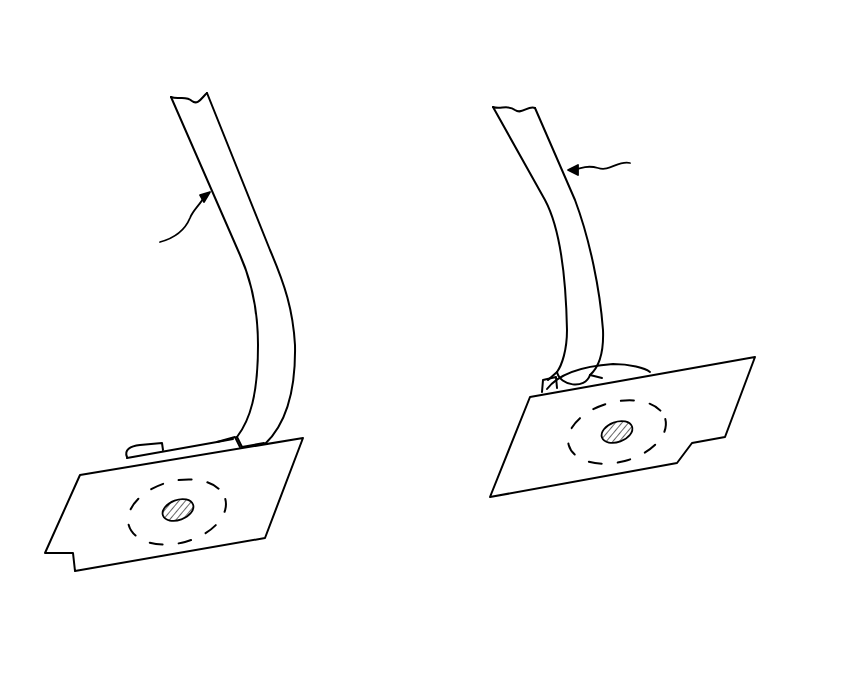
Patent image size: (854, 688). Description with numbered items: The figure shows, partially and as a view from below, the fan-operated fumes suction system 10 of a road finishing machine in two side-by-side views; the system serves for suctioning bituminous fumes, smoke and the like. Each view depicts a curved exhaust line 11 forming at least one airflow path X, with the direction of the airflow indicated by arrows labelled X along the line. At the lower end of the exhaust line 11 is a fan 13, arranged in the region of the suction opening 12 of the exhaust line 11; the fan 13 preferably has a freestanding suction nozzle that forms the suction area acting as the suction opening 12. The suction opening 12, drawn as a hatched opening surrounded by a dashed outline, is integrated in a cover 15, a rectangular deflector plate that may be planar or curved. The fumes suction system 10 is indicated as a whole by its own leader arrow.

The fumes suction system 10 is at (385, 67).
The exhaust line 11 is at (278, 291).
The suction opening 12 is at (176, 520).
The fan 13 is at (182, 452).
The cover 15 is at (273, 485).